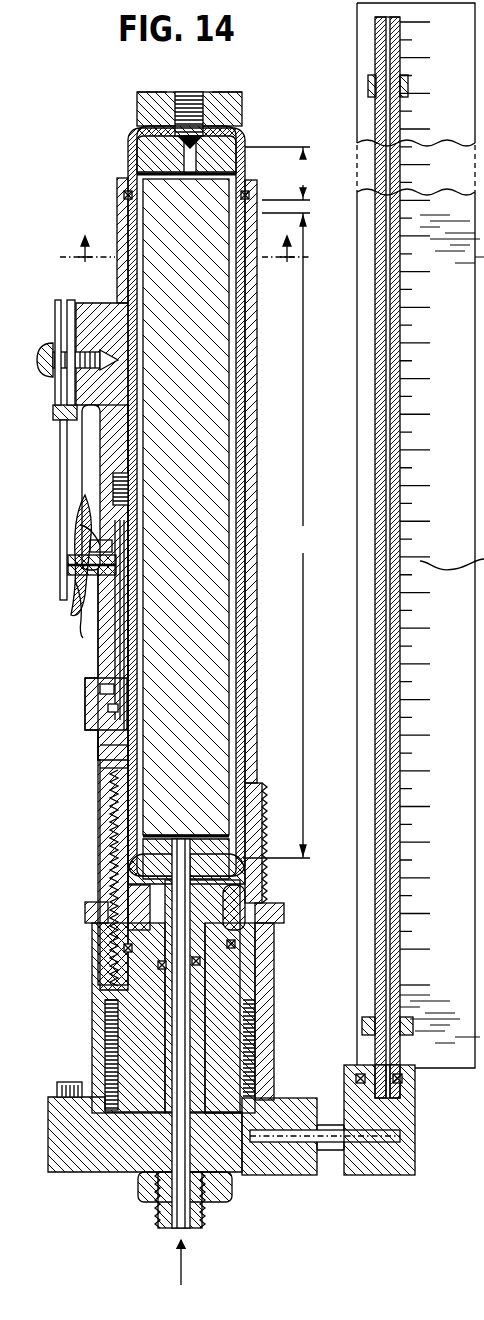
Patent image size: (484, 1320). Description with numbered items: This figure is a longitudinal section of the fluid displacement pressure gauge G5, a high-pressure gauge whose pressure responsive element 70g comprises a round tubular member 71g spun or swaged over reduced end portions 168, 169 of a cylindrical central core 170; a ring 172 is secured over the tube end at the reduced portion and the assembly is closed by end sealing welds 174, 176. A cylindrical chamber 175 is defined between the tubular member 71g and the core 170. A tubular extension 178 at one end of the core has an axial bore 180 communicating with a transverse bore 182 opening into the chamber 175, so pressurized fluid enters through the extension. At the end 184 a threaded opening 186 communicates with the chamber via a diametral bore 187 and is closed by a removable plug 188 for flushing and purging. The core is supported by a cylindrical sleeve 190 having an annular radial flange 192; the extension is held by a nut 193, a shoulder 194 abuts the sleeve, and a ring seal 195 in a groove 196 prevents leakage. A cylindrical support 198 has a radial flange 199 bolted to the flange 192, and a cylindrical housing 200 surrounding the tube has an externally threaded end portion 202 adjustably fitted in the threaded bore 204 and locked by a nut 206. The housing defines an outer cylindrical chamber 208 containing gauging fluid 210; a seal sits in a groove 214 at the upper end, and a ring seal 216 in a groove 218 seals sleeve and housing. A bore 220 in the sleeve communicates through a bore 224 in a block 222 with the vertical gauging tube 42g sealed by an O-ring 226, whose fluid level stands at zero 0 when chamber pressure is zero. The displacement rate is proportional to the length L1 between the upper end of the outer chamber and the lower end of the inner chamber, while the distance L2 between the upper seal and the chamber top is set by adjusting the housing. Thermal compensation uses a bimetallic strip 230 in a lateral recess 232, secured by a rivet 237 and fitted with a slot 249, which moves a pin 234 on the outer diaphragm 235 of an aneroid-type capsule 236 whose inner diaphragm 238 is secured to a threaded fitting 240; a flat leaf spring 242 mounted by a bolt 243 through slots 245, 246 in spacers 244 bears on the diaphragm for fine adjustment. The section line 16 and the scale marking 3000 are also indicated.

The reduced end portion 168 is at (186, 97).
The reduced end portion 169 is at (132, 872).
The cylindrical central core 170 is at (132, 212).
The ring 172 is at (137, 104).
The end sealing weld 174 is at (152, 92).
The cylindrical chamber 175 is at (118, 662).
The end sealing weld 176 is at (130, 935).
The tubular extension 178 is at (160, 1215).
The axial bore 180 is at (200, 1215).
The transverse bore 182 is at (205, 830).
The end of core 184 is at (212, 94).
The threaded opening 186 is at (228, 135).
The diametral bore 187 is at (226, 172).
The removable plug 188 is at (178, 120).
The cylindrical sleeve 190 is at (132, 1035).
The annular radial flange 192 is at (75, 1150).
The nut 193 is at (142, 1185).
The shoulder 194 is at (130, 900).
The ring seal 195 is at (252, 968).
The groove 196 is at (248, 995).
The cylindrical support 198 is at (108, 1000).
The radial flange 199 is at (55, 1100).
The cylindrical housing 200 is at (168, 228).
The end portion 202 is at (110, 830).
The threaded bore 204 is at (276, 1042).
The nut 206 is at (96, 909).
The cylindrical chamber 208 is at (122, 455).
The gauging fluid 210 is at (114, 806).
The groove 214 is at (127, 190).
The ring seal 216 is at (262, 946).
The groove 218 is at (120, 964).
The bore 220 is at (258, 1150).
The block 222 is at (408, 1152).
The bore 224 is at (382, 1132).
The O-ring 226 is at (410, 1078).
The bimetallic strip 230 is at (113, 640).
The lateral recess 232 is at (117, 485).
The pin 234 is at (122, 564).
The outer diaphragm 235 is at (80, 610).
The aneroid-type capsule 236 is at (84, 545).
The rivet 237 is at (110, 712).
The inner diaphragm 238 is at (78, 514).
The threaded fitting 240 is at (95, 540).
The flat leaf spring 242 is at (64, 450).
The bolt 243 is at (42, 360).
The spacers 244 is at (70, 305).
The slot 245 is at (38, 352).
The slot 246 is at (45, 352).
The slot 249 is at (112, 690).
The pressure responsive element 70g is at (116, 772).
The tubular member 71g is at (120, 746).
The gauging tube 42g is at (378, 878).
The fluid displacement pressure gauge G5 is at (280, 92).
The section line 16 is at (185, 268).
The length L1 is at (302, 535).
The distance L2 is at (282, 502).
The scale value 3000 is at (442, 480).
The zero reading 0 is at (422, 985).